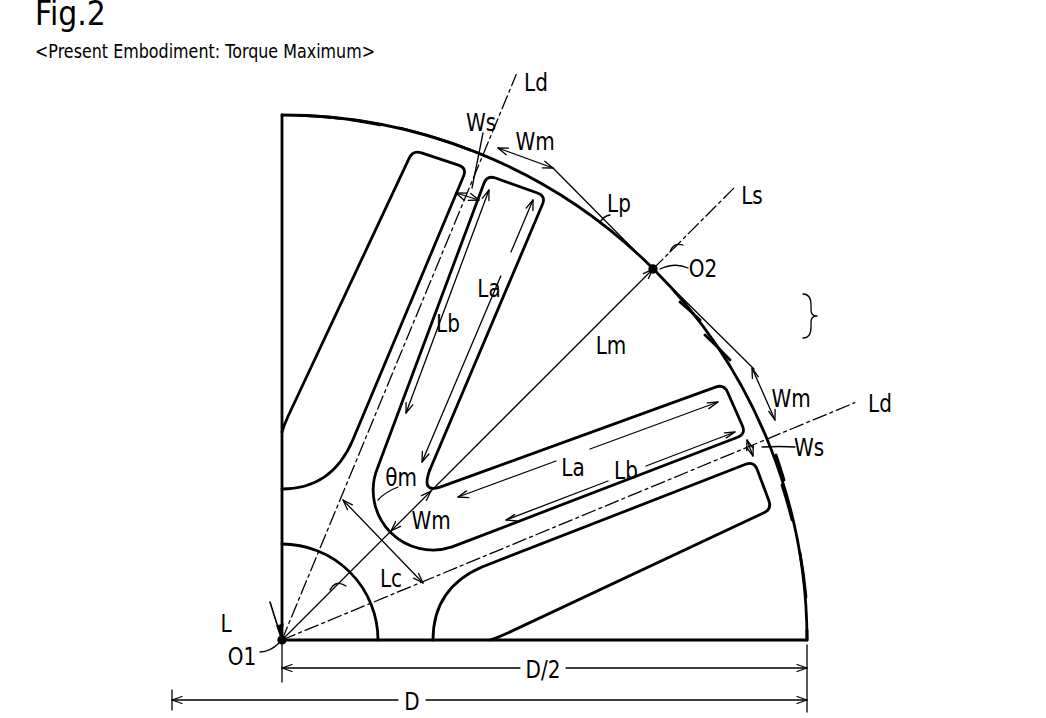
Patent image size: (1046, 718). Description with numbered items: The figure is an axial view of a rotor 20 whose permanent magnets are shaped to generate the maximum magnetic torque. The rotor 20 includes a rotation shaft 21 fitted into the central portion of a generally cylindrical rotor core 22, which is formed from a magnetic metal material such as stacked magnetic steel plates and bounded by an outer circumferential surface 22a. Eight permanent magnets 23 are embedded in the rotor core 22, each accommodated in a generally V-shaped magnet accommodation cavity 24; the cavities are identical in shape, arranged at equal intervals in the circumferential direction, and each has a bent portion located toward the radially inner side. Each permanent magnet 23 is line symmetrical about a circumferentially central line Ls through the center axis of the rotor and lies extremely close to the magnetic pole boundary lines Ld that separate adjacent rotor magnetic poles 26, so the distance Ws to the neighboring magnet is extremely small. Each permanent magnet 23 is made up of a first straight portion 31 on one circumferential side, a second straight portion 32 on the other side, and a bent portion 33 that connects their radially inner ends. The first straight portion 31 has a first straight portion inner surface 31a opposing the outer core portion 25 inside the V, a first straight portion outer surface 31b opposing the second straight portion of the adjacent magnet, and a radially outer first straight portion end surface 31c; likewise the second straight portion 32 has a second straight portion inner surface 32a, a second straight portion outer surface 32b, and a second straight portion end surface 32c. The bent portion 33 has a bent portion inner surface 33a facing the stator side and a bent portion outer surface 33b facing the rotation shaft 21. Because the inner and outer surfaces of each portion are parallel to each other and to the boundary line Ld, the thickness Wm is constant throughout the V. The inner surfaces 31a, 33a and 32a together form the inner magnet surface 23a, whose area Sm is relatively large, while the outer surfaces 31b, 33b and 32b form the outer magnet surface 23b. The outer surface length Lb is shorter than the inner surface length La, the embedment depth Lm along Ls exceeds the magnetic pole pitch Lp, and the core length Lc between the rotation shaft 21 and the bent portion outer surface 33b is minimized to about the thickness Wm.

The rotor 20 is at (825, 150).
The rotation shaft 21 is at (285, 560).
The rotor core 22 is at (801, 554).
The outer circumferential surface 22a is at (806, 597).
The permanent magnet 23 is at (430, 140).
The inner magnet surface 23a is at (370, 213).
The outer magnet surface 23b is at (392, 374).
The magnet accommodation cavity 24 is at (353, 293).
The outer core portion 25 is at (324, 117).
The rotor magnetic pole 26 is at (364, 121).
The first straight portion 31 is at (498, 312).
The first straight portion inner surface 31a is at (483, 356).
The first straight portion outer surface 31b is at (458, 241).
The first straight portion end surface 31c is at (548, 183).
The second straight portion 32 is at (410, 160).
The second straight portion inner surface 32a is at (398, 183).
The second straight portion outer surface 32b is at (657, 468).
The second straight portion end surface 32c is at (456, 150).
The bent portion 33 is at (283, 455).
The bent portion inner surface 33a is at (284, 420).
The bent portion outer surface 33b is at (283, 493).